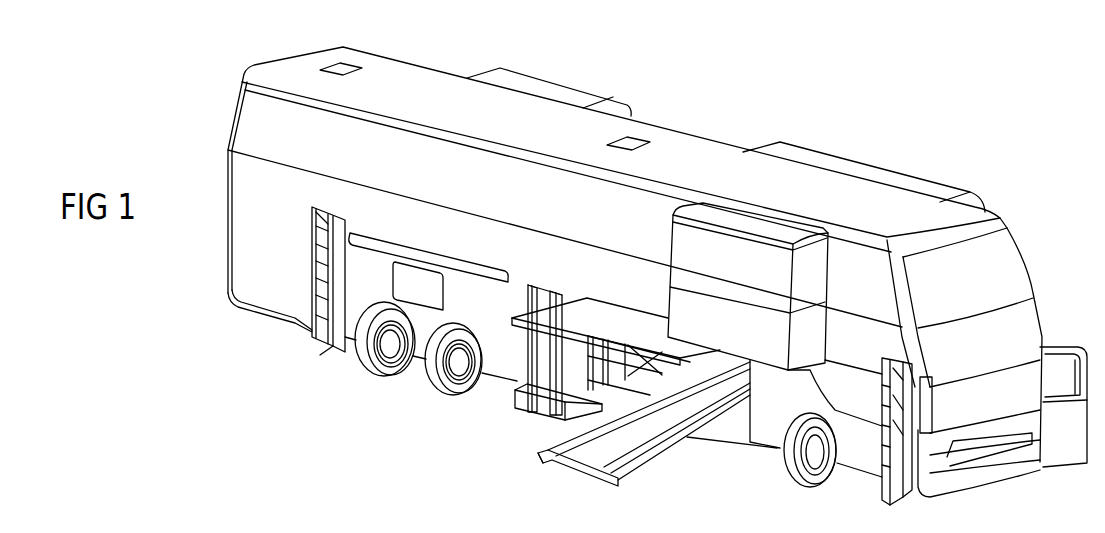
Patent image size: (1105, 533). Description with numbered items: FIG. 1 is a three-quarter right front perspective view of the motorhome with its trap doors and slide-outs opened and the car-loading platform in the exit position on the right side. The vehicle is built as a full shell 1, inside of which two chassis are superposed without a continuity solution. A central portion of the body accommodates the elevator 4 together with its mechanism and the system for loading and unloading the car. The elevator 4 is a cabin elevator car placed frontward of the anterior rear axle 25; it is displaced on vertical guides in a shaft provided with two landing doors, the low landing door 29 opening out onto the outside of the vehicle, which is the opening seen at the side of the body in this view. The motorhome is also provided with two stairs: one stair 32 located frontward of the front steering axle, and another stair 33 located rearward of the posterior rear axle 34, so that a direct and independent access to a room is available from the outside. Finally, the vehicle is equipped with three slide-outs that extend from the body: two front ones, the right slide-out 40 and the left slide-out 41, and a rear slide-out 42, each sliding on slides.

The full shell 1 is at (273, 228).
The stair 33 is at (310, 332).
The posterior rear axle 34 is at (370, 362).
The anterior rear axle 25 is at (437, 373).
The elevator 4 is at (538, 362).
The low landing door 29 is at (535, 405).
The right front slide-out 40 is at (718, 210).
The left front slide-out 41 is at (848, 172).
The rear slide-out 42 is at (583, 102).
The stair 32 is at (893, 442).